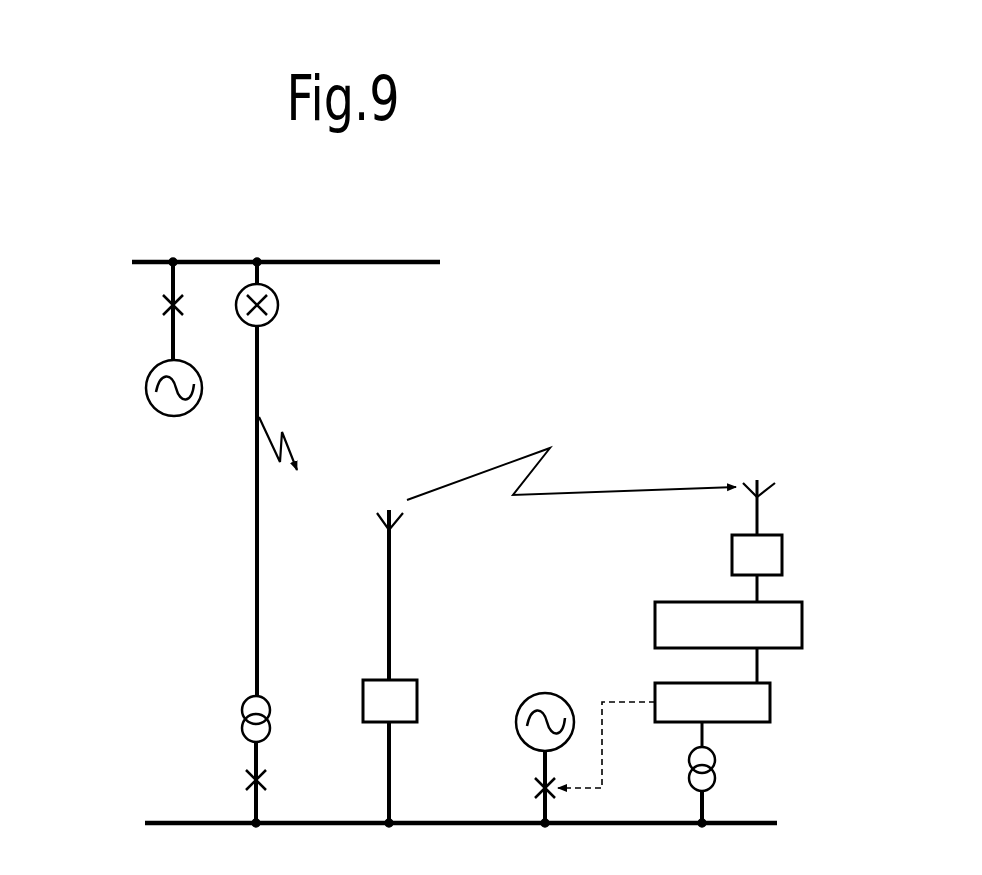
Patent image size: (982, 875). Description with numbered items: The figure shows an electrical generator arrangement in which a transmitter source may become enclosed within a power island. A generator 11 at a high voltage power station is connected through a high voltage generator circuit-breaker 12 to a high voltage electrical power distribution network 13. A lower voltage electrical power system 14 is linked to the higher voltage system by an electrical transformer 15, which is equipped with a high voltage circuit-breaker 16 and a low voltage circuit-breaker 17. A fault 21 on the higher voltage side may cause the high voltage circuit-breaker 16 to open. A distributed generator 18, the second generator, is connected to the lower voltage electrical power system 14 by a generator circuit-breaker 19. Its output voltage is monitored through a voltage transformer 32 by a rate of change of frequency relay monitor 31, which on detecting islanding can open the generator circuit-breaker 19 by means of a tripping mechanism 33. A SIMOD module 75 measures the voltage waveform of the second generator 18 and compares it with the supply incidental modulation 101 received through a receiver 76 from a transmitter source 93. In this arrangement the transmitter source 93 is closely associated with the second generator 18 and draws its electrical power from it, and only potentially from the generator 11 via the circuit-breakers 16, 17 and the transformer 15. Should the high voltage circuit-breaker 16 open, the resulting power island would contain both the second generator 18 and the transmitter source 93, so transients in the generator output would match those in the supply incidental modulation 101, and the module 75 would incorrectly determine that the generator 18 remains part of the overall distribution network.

The generator 11 is at (147, 388).
The high voltage generator circuit-breaker 12 is at (163, 304).
The high voltage electrical power distribution network 13 is at (155, 260).
The lower voltage electrical power system 14 is at (157, 820).
The electrical transformer 15 is at (240, 705).
The high voltage circuit-breaker 16 is at (278, 312).
The low voltage circuit-breaker 17 is at (268, 782).
The distributed generator 18 is at (540, 695).
The generator circuit-breaker 19 is at (537, 787).
The fault 21 is at (302, 445).
The rate of change of frequency relay monitor 31 is at (668, 683).
The voltage transformer 32 is at (716, 760).
The tripping mechanism 33 is at (602, 755).
The SIMOD module 75 is at (678, 602).
The receiver 76 is at (783, 552).
The transmitter source 93 is at (397, 490).
The supply incidental modulation 101 is at (598, 462).